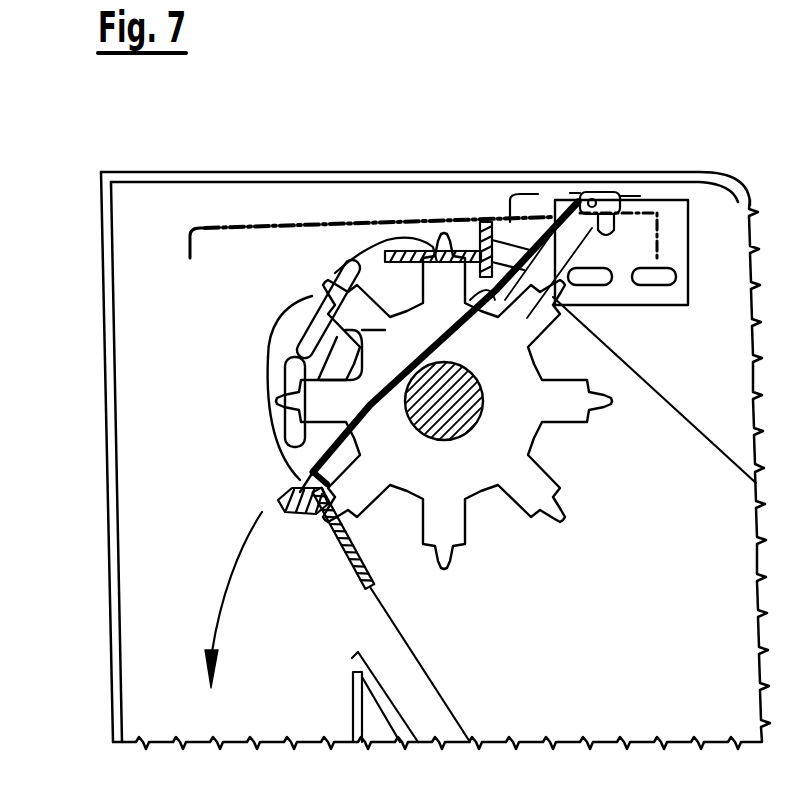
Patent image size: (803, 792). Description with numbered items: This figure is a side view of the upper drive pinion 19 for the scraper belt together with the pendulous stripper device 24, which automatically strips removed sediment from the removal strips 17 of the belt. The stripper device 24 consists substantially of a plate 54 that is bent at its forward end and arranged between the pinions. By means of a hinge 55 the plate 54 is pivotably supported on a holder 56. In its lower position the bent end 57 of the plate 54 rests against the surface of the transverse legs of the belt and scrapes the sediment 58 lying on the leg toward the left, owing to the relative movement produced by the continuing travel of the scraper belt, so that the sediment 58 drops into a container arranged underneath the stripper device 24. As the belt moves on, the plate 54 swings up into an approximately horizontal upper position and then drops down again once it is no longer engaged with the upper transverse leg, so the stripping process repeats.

The stripper device 24 is at (307, 212).
The hinge 55 is at (610, 196).
The holder 56 is at (661, 205).
The pinion 19 is at (365, 327).
The plate 54 is at (393, 390).
The bent end 57 is at (312, 478).
The sediment 58 is at (296, 486).
The removal strips 17 is at (306, 512).